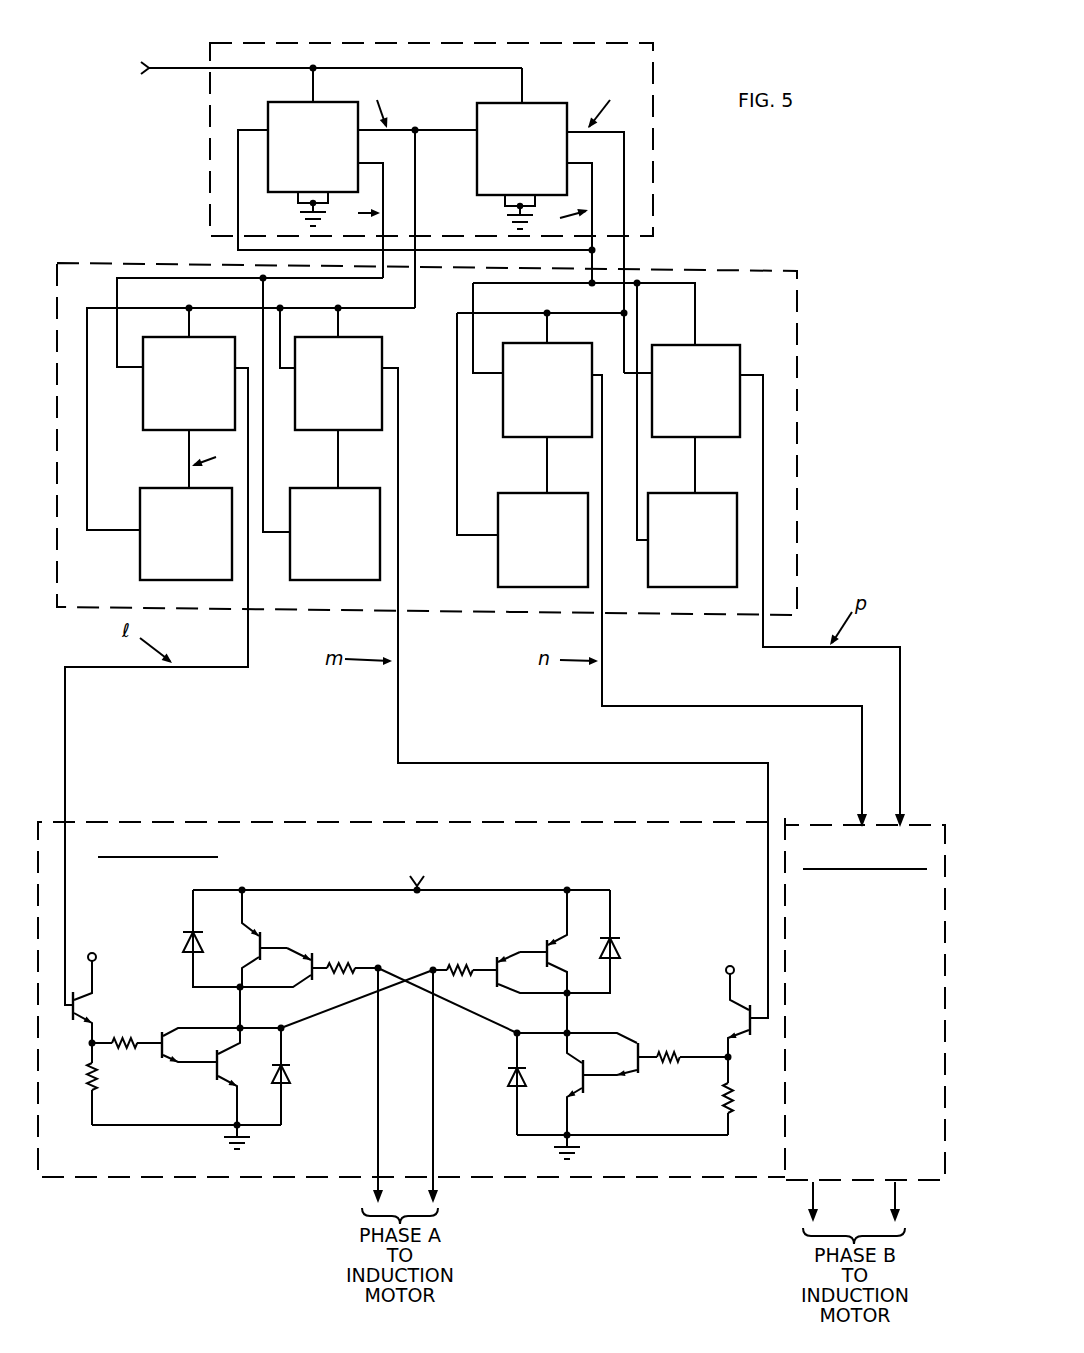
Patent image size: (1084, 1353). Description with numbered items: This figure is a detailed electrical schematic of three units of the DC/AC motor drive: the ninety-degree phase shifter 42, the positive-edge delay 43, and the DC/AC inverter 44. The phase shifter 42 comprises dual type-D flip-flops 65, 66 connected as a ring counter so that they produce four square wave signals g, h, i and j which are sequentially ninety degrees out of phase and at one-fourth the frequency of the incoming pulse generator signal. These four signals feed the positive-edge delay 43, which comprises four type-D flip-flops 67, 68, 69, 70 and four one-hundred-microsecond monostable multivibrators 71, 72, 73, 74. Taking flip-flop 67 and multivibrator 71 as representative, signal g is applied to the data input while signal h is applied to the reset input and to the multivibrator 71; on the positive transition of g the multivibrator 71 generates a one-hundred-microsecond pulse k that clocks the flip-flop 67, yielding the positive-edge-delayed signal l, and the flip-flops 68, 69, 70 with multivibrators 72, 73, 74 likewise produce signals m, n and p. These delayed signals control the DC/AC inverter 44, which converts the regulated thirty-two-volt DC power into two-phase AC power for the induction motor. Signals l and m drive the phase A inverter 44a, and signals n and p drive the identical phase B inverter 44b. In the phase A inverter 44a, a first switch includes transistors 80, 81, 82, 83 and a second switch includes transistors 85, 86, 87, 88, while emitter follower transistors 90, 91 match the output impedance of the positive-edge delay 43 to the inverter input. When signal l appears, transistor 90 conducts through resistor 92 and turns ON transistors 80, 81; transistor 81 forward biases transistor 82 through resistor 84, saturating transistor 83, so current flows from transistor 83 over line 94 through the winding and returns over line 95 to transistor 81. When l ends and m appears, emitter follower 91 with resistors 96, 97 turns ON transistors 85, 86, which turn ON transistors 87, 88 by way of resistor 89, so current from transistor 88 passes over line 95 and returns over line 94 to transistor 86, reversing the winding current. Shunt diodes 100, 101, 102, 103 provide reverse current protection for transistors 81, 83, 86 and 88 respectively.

The 90°-phase shifter 42 is at (562, 43).
The positive-edge delay 43 is at (693, 268).
The DC/AC inverter 44 is at (491, 979).
The phase A inverter 44a is at (140, 820).
The phase B inverter 44b is at (830, 823).
The type-D flip-flop 65 is at (268, 108).
The type-D flip-flop 66 is at (545, 103).
The type-D flip-flop 67 is at (143, 400).
The type-D flip-flop 68 is at (385, 347).
The type-D flip-flop 69 is at (500, 412).
The type-D flip-flop 70 is at (722, 345).
The 100-microsecond monostable multivibrator 71 is at (148, 488).
The 100-microsecond monostable multivibrator 72 is at (318, 488).
The 100-microsecond monostable multivibrator 73 is at (498, 565).
The 100-microsecond monostable multivibrator 74 is at (710, 493).
The transistor 80 is at (174, 1026).
The transistor 81 is at (212, 1068).
The transistor 82 is at (495, 960).
The transistor 83 is at (545, 945).
The resistor 84 is at (466, 962).
The transistor 85 is at (664, 1076).
The transistor 86 is at (585, 1086).
The transistor 87 is at (316, 957).
The transistor 88 is at (263, 940).
The resistor 89 is at (345, 963).
The emitter follower transistor 90 is at (85, 996).
The emitter follower transistor 91 is at (738, 1023).
The resistor 92 is at (100, 1082).
The line 94 is at (376, 1129).
The line 95 is at (124, 1050).
The resistor 96 is at (735, 1100).
The resistor 97 is at (674, 1048).
The shunt diode 100 is at (290, 1076).
The shunt diode 101 is at (622, 952).
The shunt diode 102 is at (507, 1081).
The shunt diode 103 is at (185, 940).